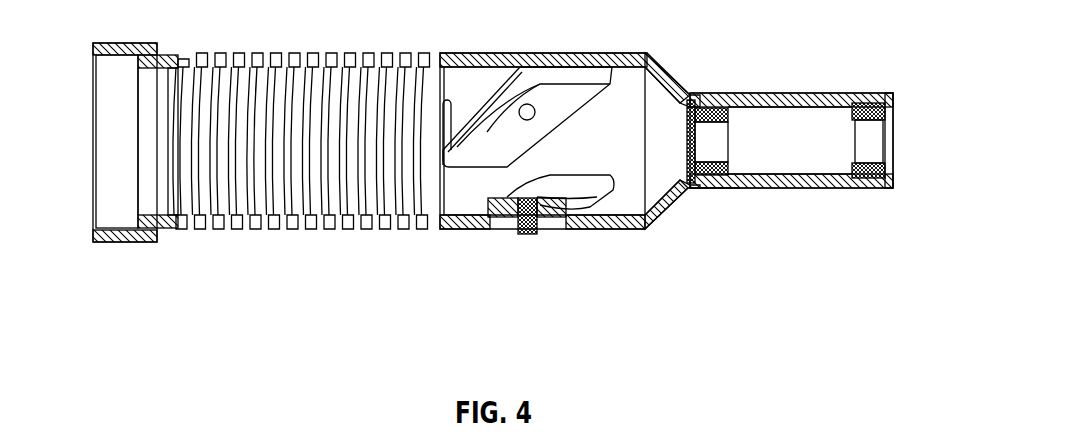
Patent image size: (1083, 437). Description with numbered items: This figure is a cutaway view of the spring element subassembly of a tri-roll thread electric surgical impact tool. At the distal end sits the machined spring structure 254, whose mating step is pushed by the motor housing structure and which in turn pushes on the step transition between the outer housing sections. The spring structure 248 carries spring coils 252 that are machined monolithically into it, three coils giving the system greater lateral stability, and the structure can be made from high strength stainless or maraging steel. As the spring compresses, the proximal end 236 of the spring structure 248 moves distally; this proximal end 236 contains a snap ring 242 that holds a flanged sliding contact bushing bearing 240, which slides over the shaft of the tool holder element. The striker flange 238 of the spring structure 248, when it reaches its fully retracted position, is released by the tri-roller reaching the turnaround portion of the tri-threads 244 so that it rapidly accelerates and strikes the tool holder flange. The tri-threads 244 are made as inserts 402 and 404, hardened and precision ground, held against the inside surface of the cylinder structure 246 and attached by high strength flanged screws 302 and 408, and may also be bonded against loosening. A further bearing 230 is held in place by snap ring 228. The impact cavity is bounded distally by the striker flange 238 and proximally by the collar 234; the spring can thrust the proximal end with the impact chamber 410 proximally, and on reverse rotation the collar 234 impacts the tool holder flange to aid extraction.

The snap ring 228 is at (894, 176).
The bearing 230 is at (880, 180).
The collar 234 is at (852, 190).
The proximal end 236 is at (792, 190).
The striker flange 238 is at (722, 192).
The flanged sliding contact bushing bearing 240 is at (700, 190).
The snap ring 242 is at (683, 197).
The tri-threads 244 is at (621, 119).
The cylinder structure 246 is at (470, 229).
The spring structure 248 is at (301, 252).
The spring coils 252 is at (237, 231).
The machined spring structure 254 is at (127, 242).
The flanged screw 302 is at (520, 235).
The tri-thread insert 402 is at (592, 188).
The tri-thread insert 404 is at (487, 133).
The flanged screw 408 is at (534, 105).
The impact chamber 410 is at (783, 126).